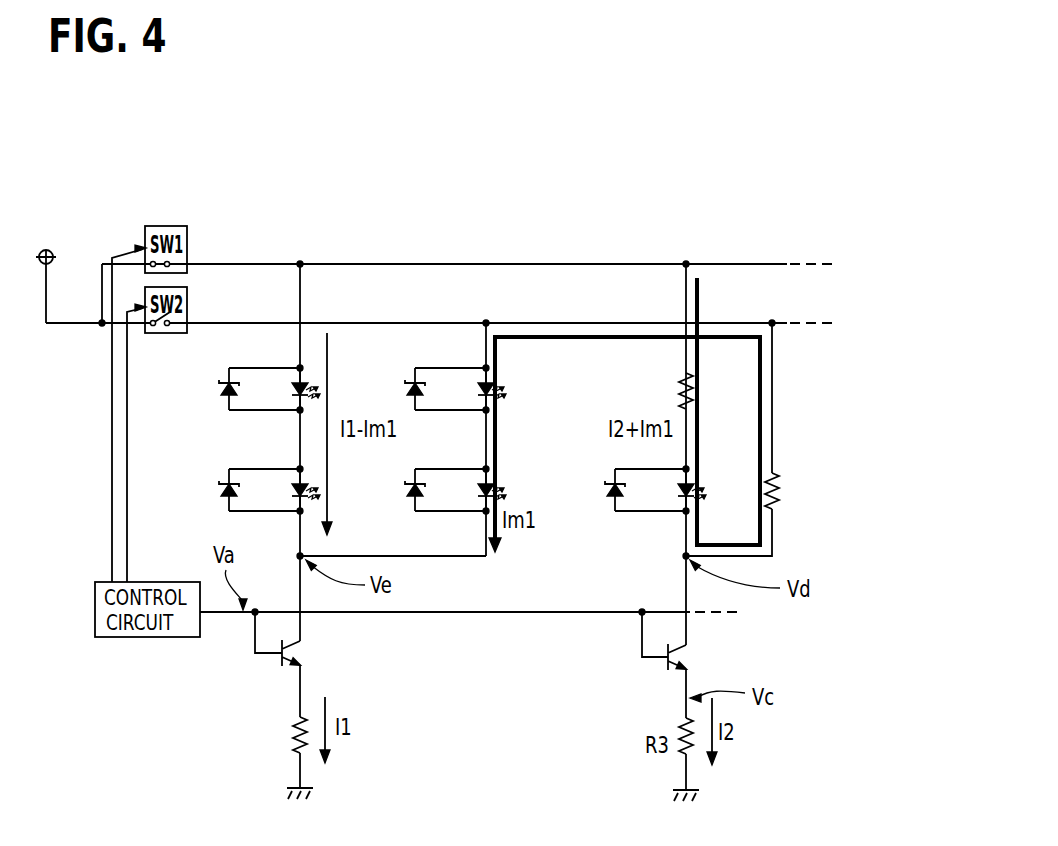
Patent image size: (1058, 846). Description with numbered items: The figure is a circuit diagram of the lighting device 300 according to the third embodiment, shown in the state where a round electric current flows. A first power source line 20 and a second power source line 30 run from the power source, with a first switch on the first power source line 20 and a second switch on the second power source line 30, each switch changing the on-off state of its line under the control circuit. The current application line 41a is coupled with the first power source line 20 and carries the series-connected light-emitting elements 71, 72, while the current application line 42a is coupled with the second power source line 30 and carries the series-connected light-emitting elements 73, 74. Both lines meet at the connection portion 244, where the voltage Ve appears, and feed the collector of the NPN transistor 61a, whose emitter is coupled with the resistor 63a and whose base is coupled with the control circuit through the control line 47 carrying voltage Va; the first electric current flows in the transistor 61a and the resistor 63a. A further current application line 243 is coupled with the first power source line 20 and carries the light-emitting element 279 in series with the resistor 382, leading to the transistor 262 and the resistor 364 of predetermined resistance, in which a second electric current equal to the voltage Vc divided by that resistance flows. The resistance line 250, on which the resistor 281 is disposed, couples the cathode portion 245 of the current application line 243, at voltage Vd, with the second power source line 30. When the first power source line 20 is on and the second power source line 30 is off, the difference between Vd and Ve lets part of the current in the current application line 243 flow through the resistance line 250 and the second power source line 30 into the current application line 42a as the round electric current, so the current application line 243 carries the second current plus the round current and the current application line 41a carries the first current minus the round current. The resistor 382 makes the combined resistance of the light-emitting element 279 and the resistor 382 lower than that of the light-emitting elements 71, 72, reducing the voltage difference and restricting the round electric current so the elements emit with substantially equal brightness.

The lighting device 300 is at (82, 258).
The first power source line 20 is at (235, 263).
The second power source line 30 is at (254, 322).
The current application line 41a is at (302, 292).
The current application line 42a is at (488, 344).
The current application line 243 is at (688, 294).
The resistance line 250 is at (773, 355).
The light-emitting element 71 is at (311, 377).
The light-emitting element 72 is at (309, 475).
The light-emitting element 73 is at (496, 376).
The light-emitting element 74 is at (496, 476).
The light-emitting element 279 is at (692, 479).
The resistor 281 is at (775, 490).
The resistor 382 is at (676, 390).
The connection portion 244 is at (297, 555).
The cathode portion 245 is at (682, 557).
The control line 47 is at (225, 614).
The transistor 61a is at (290, 644).
The resistor 63a is at (292, 736).
The transistor 262 is at (680, 650).
The resistor 364 is at (678, 722).